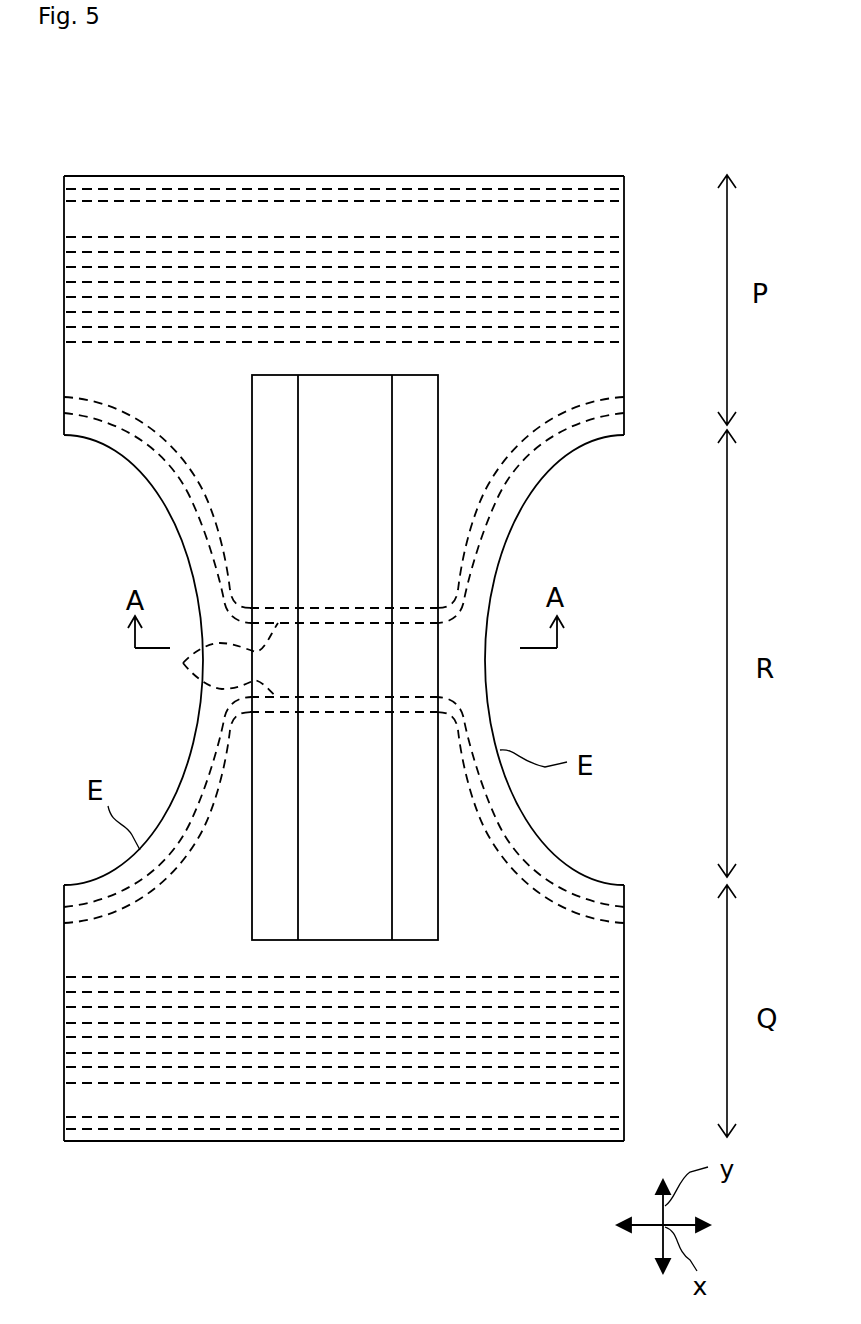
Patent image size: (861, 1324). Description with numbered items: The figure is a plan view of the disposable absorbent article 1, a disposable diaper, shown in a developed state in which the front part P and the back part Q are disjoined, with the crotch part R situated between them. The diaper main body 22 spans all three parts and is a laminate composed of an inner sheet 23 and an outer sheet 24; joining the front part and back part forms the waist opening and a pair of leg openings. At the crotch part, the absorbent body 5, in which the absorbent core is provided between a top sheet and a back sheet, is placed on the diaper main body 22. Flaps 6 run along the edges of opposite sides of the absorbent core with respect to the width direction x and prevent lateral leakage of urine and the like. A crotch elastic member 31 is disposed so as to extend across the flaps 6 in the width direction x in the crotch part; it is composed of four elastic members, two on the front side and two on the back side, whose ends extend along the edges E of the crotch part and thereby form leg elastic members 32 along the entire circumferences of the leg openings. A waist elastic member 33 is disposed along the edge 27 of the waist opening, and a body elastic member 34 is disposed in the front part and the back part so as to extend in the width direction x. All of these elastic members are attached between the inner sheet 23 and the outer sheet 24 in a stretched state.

The disposable absorbent article 1 is at (652, 152).
The diaper main body 22 is at (626, 240).
The inner sheet 23 is at (108, 198).
The outer sheet 24 is at (358, 186).
The edge of the waist opening 27 is at (512, 178).
The crotch elastic member 31 is at (205, 683).
The leg elastic members 32 is at (158, 458).
The waist elastic member 33 is at (231, 192).
The body elastic member 34 is at (520, 268).
The absorbent body 5 is at (313, 518).
The flaps 6 is at (425, 547).